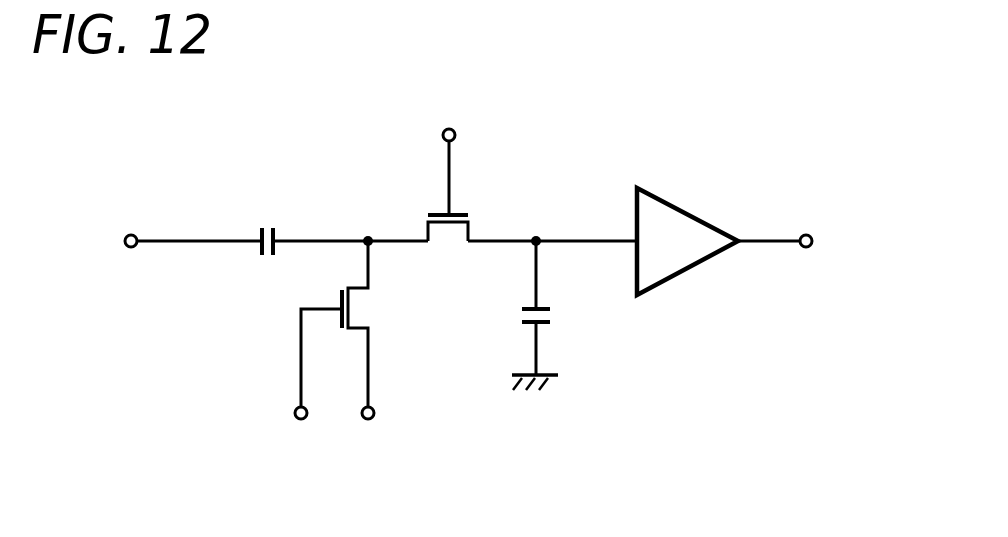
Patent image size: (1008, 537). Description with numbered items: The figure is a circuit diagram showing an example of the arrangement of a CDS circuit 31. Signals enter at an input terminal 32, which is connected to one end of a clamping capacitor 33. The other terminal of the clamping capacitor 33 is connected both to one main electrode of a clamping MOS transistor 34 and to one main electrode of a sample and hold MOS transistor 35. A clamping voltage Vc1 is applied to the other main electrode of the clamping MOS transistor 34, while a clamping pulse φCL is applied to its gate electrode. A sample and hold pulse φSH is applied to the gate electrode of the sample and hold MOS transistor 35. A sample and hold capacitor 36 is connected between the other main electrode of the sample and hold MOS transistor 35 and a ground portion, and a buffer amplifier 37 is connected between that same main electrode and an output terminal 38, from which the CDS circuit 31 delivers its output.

The CDS circuit 31 is at (738, 420).
The input terminal 32 is at (131, 234).
The clamping capacitor 33 is at (264, 212).
The clamping MOS transistor 34 is at (367, 307).
The sample and hold MOS transistor 35 is at (451, 249).
The sample and hold capacitor 36 is at (556, 315).
The buffer amplifier 37 is at (684, 228).
The output terminal 38 is at (805, 233).